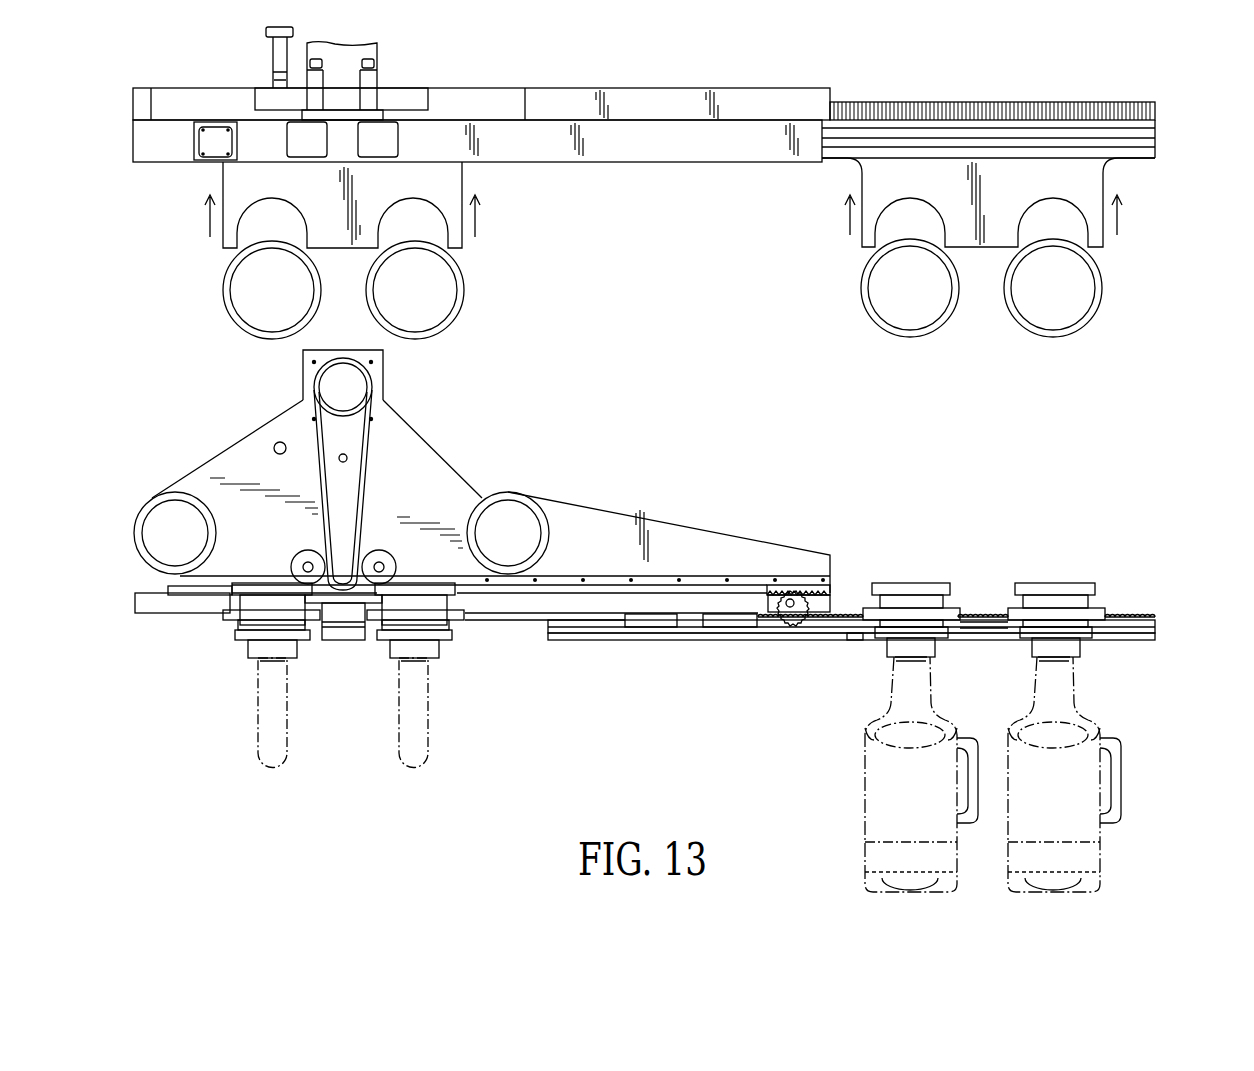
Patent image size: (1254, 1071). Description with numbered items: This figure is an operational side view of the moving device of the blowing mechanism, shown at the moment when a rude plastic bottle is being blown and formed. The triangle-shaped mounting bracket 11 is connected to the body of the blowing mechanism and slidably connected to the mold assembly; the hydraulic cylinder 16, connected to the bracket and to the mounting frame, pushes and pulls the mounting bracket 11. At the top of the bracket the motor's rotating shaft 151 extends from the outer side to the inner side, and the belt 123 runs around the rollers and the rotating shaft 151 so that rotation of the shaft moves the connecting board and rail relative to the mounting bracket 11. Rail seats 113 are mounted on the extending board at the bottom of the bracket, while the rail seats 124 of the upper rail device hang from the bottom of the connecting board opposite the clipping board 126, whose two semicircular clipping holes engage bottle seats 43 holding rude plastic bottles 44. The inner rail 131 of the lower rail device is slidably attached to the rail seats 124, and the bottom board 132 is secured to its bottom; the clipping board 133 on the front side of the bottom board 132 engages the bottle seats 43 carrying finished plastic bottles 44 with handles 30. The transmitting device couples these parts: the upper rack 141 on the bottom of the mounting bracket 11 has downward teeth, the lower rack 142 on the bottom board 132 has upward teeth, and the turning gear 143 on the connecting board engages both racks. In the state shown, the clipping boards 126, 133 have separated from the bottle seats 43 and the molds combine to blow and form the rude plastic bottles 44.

The mounting bracket 11 is at (437, 455).
The hydraulic cylinder 16 is at (278, 62).
The handle 30 is at (1135, 772).
The bottle seat 43 is at (918, 593).
The plastic bottle 44 is at (420, 717).
The rail seat 113 is at (323, 618).
The belt 123 is at (362, 503).
The rail seat 124 is at (655, 622).
The clipping board 126 is at (347, 595).
The inner rail 131 is at (548, 622).
The bottom board 132 is at (575, 635).
The clipping board 133 is at (983, 635).
The upper rack 141 is at (793, 582).
The lower rack 142 is at (1135, 617).
The turning gear 143 is at (805, 600).
The rotating shaft 151 is at (362, 382).